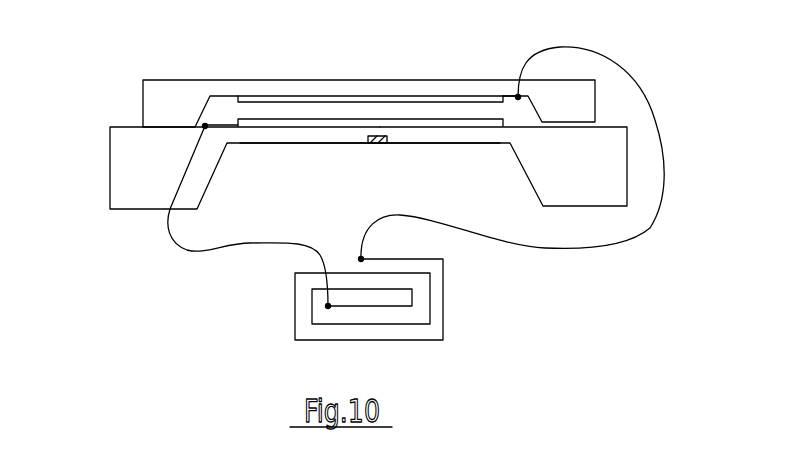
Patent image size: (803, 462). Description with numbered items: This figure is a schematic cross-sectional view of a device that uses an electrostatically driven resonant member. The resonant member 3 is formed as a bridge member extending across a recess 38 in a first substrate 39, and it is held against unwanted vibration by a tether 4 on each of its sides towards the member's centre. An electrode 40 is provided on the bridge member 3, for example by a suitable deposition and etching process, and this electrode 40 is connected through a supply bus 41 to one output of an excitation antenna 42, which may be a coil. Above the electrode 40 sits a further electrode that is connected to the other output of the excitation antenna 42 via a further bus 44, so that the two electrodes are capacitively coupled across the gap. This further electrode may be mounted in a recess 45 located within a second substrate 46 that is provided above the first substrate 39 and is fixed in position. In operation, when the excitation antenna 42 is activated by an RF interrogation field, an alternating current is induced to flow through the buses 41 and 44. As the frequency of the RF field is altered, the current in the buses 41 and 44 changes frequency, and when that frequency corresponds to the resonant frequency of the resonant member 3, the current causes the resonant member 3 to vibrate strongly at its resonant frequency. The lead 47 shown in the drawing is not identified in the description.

The resonant member 3 is at (297, 136).
The tether 4 is at (377, 143).
The recess 38 is at (490, 172).
The substrate 39 is at (122, 163).
The electrode 40 is at (428, 116).
The supply bus 41 is at (186, 240).
The excitation antenna 42 is at (447, 305).
The further bus 44 is at (597, 248).
The recess 45 is at (217, 102).
The second substrate 46 is at (182, 90).
The contact point 47 is at (382, 97).